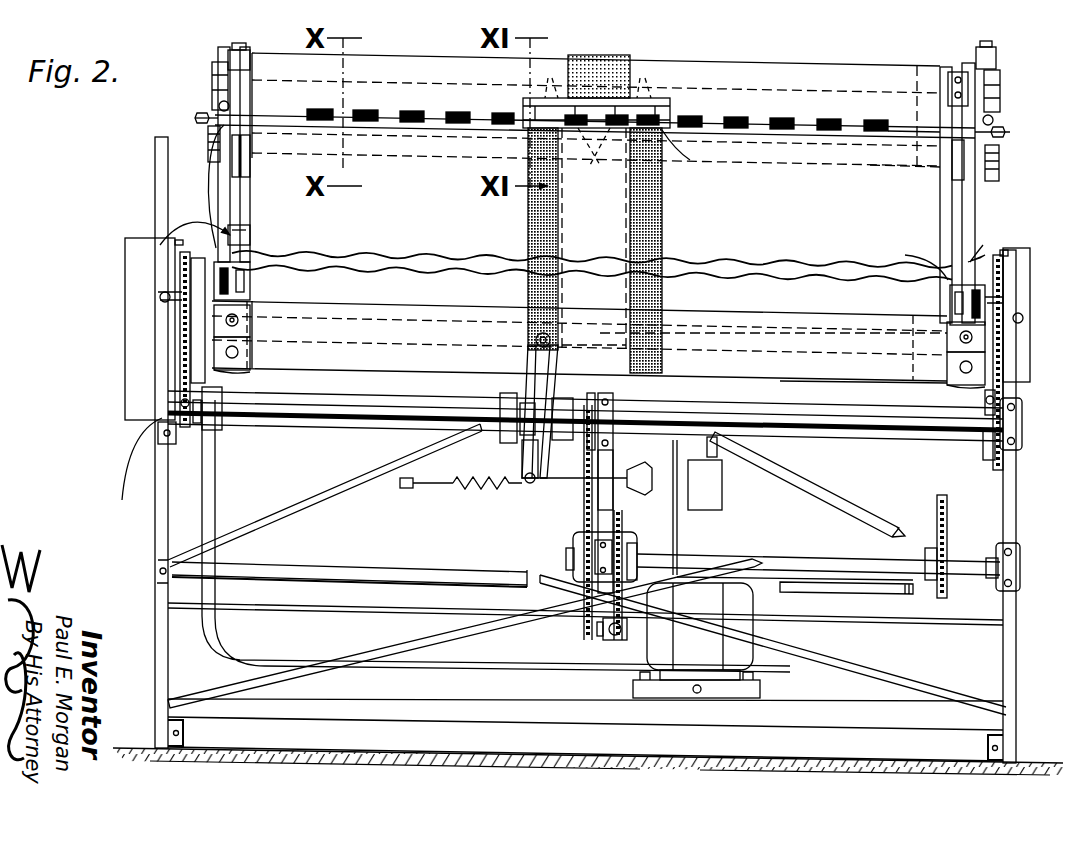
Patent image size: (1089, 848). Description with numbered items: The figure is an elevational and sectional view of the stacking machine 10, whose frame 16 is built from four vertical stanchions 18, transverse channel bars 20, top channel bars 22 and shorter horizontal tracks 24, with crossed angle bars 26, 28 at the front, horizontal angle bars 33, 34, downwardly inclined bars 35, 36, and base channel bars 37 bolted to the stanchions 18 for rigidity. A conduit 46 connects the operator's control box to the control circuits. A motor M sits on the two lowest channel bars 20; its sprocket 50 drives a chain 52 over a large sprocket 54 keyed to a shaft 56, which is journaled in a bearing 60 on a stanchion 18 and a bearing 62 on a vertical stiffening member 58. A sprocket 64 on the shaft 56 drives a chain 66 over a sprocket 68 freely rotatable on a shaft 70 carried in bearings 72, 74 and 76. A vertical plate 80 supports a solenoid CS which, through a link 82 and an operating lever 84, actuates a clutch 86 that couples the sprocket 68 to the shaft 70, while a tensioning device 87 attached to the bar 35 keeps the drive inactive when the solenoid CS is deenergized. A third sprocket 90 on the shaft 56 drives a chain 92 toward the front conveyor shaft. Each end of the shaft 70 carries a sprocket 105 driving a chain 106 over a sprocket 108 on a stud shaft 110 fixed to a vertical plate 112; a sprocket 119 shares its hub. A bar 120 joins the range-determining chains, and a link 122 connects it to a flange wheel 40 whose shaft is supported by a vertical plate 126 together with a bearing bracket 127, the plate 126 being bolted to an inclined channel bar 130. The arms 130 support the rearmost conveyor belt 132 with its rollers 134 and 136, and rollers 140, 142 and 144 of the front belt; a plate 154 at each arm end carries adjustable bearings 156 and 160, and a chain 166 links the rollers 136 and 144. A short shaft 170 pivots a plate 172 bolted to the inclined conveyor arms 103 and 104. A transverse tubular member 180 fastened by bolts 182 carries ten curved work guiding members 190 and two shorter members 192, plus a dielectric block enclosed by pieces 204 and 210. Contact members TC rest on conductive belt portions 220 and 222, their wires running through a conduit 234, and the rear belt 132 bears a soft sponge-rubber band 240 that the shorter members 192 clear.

The base frame 10 is at (318, 725).
The frame 16 is at (138, 572).
The vertical stanchion 18 is at (155, 625).
The transverse channel bar 20 is at (372, 606).
The top channel bar 22 is at (245, 235).
The horizontal track 24 is at (178, 370).
The crossed angle bar 26 is at (870, 665).
The crossed angle bar 28 is at (495, 622).
The horizontal angle bar 33 is at (365, 573).
The horizontal angle bar 34 is at (862, 590).
The downwardly inclined bar 35 is at (312, 495).
The downwardly inclined bar 36 is at (818, 490).
The base channel bar 37 is at (183, 732).
The flange wheel 40 is at (191, 348).
The conduit 46 is at (128, 470).
The sprocket 50 is at (606, 640).
The chain 52 is at (626, 513).
The large sprocket 54 is at (637, 555).
The shaft 56 is at (838, 562).
The vertical stiffening member 58 is at (613, 455).
The bearing 60 is at (1020, 555).
The bearing 62 is at (585, 550).
The sprocket 64 is at (566, 560).
The chain 66 is at (584, 512).
The sprocket 68 is at (570, 440).
The shaft 70 is at (825, 415).
The bearing 72 is at (1022, 410).
The bearing 74 is at (613, 400).
The bearing 76 is at (158, 436).
The vertical plate 80 is at (677, 525).
The link 82 is at (548, 485).
The operating lever 84 is at (522, 458).
The clutch 86 is at (520, 390).
The tensioning device 87 is at (440, 492).
The sprocket 90 is at (930, 550).
The chain 92 is at (947, 525).
The conveyor arm 103 is at (265, 255).
The conveyor arm 104 is at (921, 259).
The sprocket 105 is at (201, 425).
The chain 106 is at (222, 420).
The sprocket 108 is at (158, 292).
The stud shaft 110 is at (160, 300).
The vertical plate 112 is at (125, 260).
The sprocket 119 is at (240, 290).
The bar 120 is at (400, 308).
The link 122 is at (181, 403).
The vertical plate 126 is at (240, 370).
The bearing bracket 127 is at (255, 335).
The channel bar 130 is at (252, 100).
The rearmost endless conveyor belt 132 is at (755, 78).
The roller 134 is at (730, 320).
The roller 136 is at (425, 68).
The roller 140 is at (795, 380).
The roller 142 is at (915, 108).
The roller 144 is at (878, 165).
The plate 154 is at (212, 76).
The adjustable bearing 156 is at (250, 160).
The adjustable bearing 160 is at (235, 52).
The chain 166 is at (302, 112).
The short shaft 170 is at (195, 118).
The plate 172 is at (208, 150).
The transverse tubular member 180 is at (440, 108).
The bolt 182 is at (218, 105).
The work guiding member 190 is at (765, 115).
The work guiding member 192 is at (594, 239).
The flat dielectric piece 204 is at (683, 165).
The dielectric piece 210 is at (668, 100).
The conductive belt portion 220 is at (558, 230).
The conductive belt portion 222 is at (662, 210).
The conduit 234 is at (495, 110).
The soft resilient band 240 is at (618, 62).
The contact member TC is at (597, 78).
The solenoid CS is at (705, 485).
The motor M is at (755, 603).